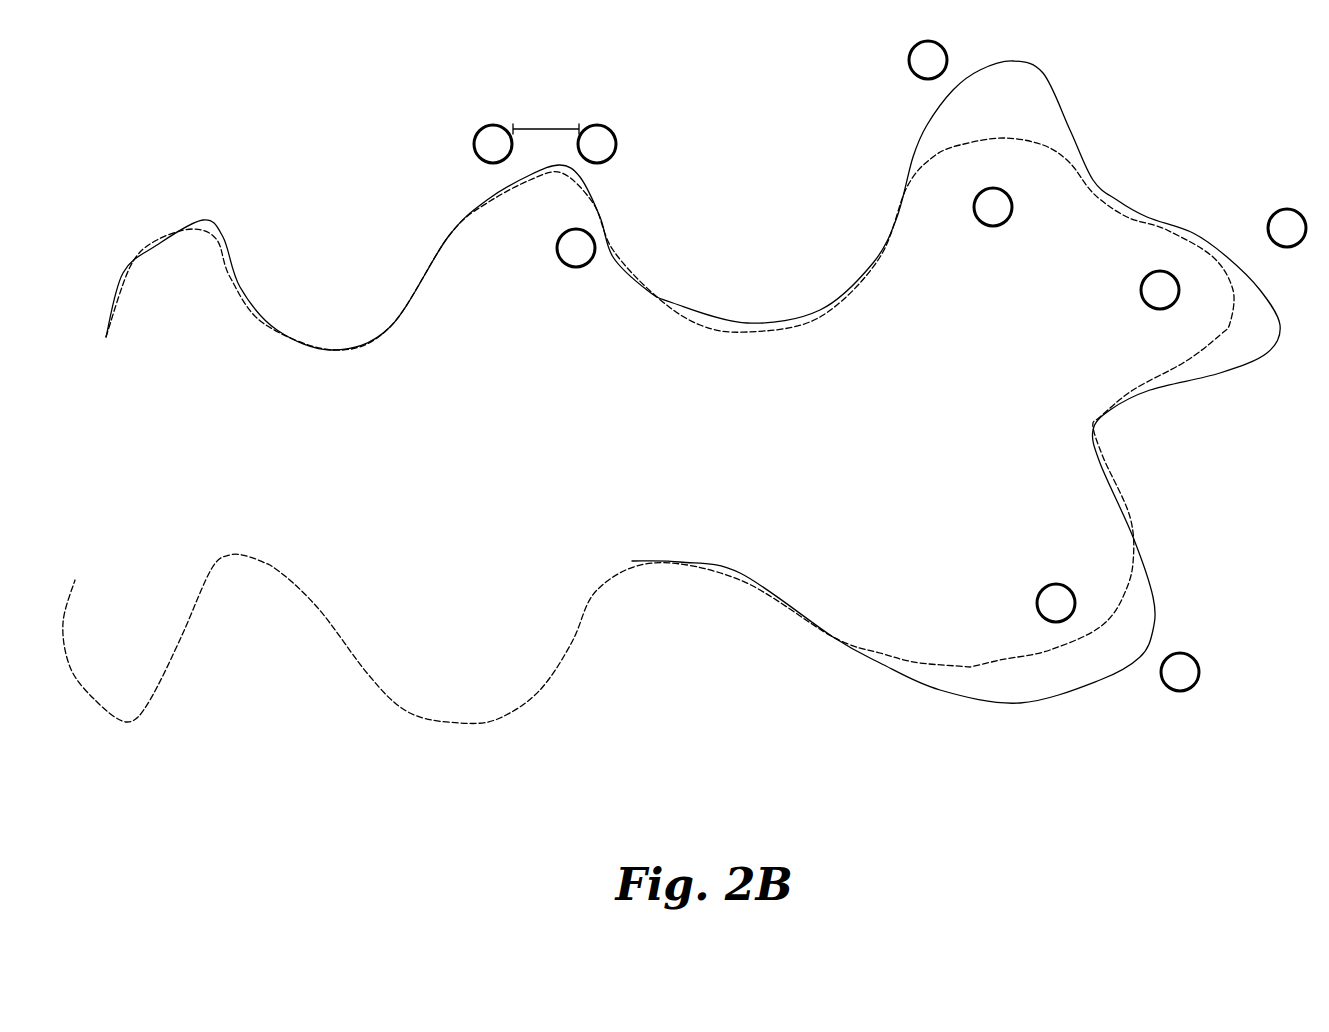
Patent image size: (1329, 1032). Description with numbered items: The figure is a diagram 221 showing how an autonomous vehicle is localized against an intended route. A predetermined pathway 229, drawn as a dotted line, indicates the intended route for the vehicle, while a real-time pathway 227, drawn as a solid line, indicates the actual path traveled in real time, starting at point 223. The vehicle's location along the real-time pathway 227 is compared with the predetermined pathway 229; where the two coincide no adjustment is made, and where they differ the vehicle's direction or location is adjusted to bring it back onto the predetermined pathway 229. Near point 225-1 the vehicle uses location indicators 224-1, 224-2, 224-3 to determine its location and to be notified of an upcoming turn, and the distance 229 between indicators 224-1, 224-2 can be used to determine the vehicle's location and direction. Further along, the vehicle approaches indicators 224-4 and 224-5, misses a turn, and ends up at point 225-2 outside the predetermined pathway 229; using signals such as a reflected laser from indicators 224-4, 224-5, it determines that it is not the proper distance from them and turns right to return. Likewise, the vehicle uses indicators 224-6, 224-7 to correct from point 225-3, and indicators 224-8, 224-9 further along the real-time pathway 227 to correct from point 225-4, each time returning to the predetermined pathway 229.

The diagram 221 is at (247, 132).
The starting point 223 is at (107, 345).
The location indicator 224-1 is at (473, 144).
The location indicator 224-2 is at (617, 144).
The location indicator 224-3 is at (576, 267).
The location indicator 224-4 is at (908, 62).
The location indicator 224-5 is at (977, 219).
The location indicator 224-6 is at (1140, 290).
The location indicator 224-7 is at (1272, 217).
The location indicator 224-8 is at (1037, 603).
The location indicator 224-9 is at (1199, 671).
The point 225-1 is at (547, 167).
The point 225-2 is at (1020, 58).
The point 225-3 is at (1272, 300).
The point 225-4 is at (1147, 657).
The real-time pathway 227 is at (927, 125).
The predetermined pathway 229 is at (538, 128).